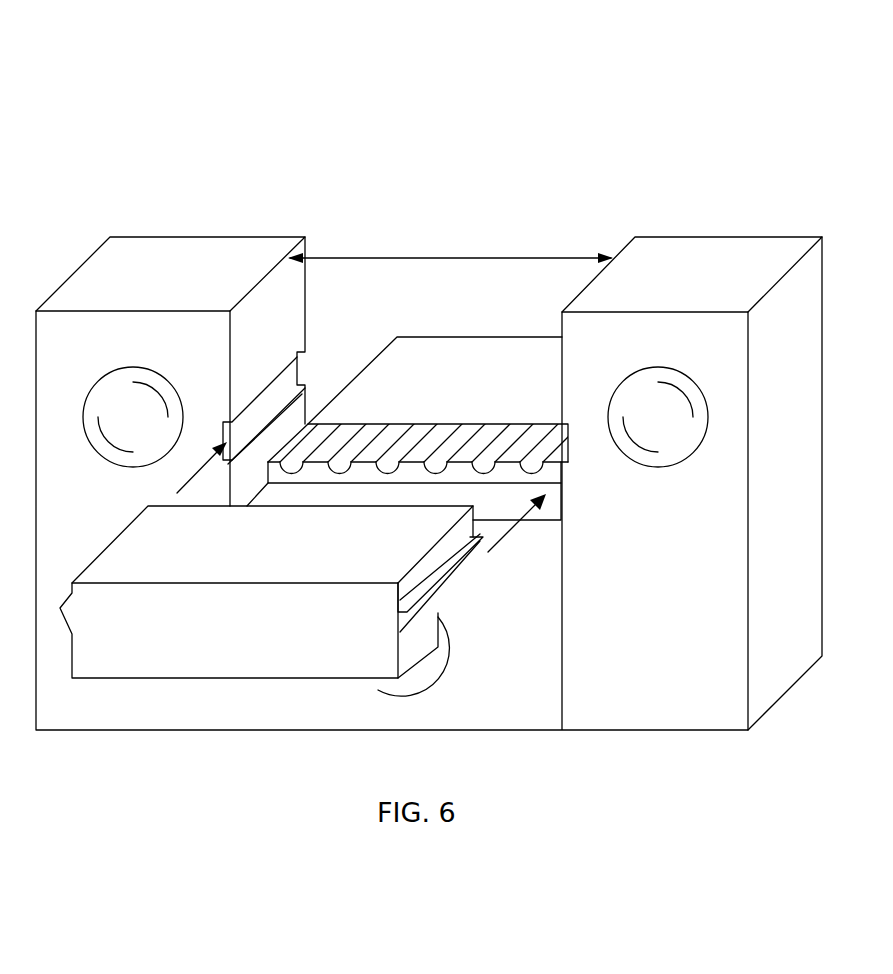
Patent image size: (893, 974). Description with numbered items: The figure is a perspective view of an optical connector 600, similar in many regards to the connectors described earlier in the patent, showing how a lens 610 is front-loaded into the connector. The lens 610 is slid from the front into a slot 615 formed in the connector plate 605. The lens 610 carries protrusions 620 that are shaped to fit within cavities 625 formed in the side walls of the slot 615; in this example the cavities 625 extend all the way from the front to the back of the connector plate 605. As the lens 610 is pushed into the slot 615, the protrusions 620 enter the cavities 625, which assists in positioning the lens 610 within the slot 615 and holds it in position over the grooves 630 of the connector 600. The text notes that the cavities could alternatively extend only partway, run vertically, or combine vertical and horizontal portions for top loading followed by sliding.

The connector 600 is at (160, 55).
The connector plate 605 is at (175, 247).
The lens 610 is at (220, 667).
The slot 615 is at (448, 258).
The protrusions 620 is at (445, 582).
The cavities 625 is at (295, 373).
The grooves 630 is at (468, 427).